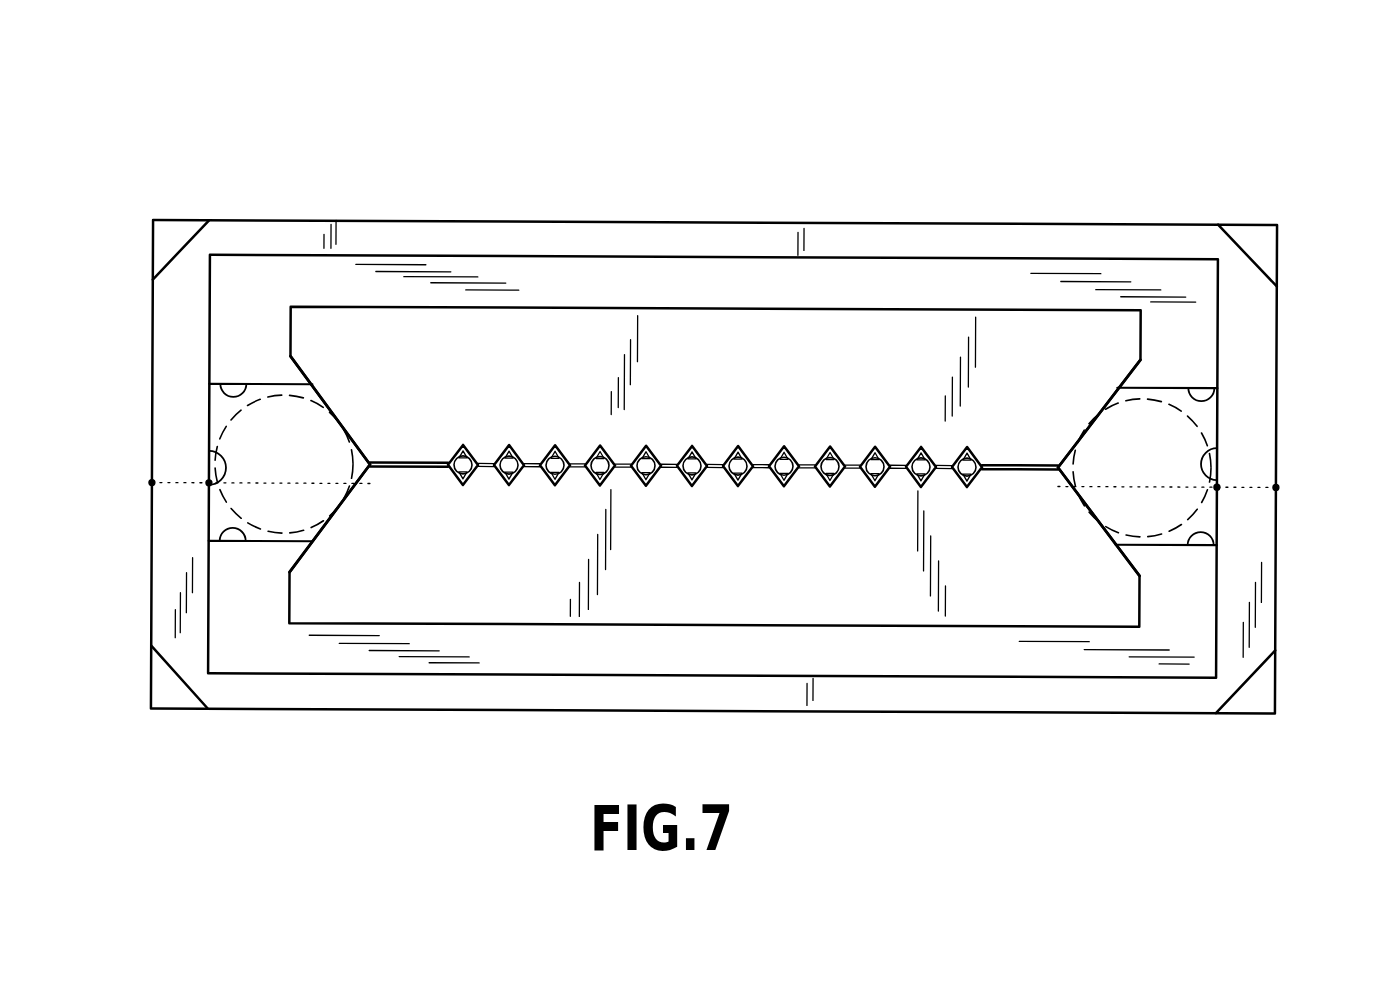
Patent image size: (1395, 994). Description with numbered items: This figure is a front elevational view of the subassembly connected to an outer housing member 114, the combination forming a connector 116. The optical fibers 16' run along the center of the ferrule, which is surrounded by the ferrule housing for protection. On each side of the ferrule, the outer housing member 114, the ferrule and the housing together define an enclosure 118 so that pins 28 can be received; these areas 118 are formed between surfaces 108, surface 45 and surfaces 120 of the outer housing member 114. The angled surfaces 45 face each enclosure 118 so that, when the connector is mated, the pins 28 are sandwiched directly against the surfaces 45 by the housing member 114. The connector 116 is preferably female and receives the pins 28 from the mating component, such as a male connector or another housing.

The connector 116 is at (172, 150).
The outer housing member 114 is at (1082, 238).
The surfaces 108 is at (219, 386).
The enclosure 118 is at (222, 525).
The surfaces of the outer housing member 120 is at (209, 484).
The pins 28 is at (223, 420).
The surface 45 is at (327, 413).
The optical fibers 16' is at (714, 432).